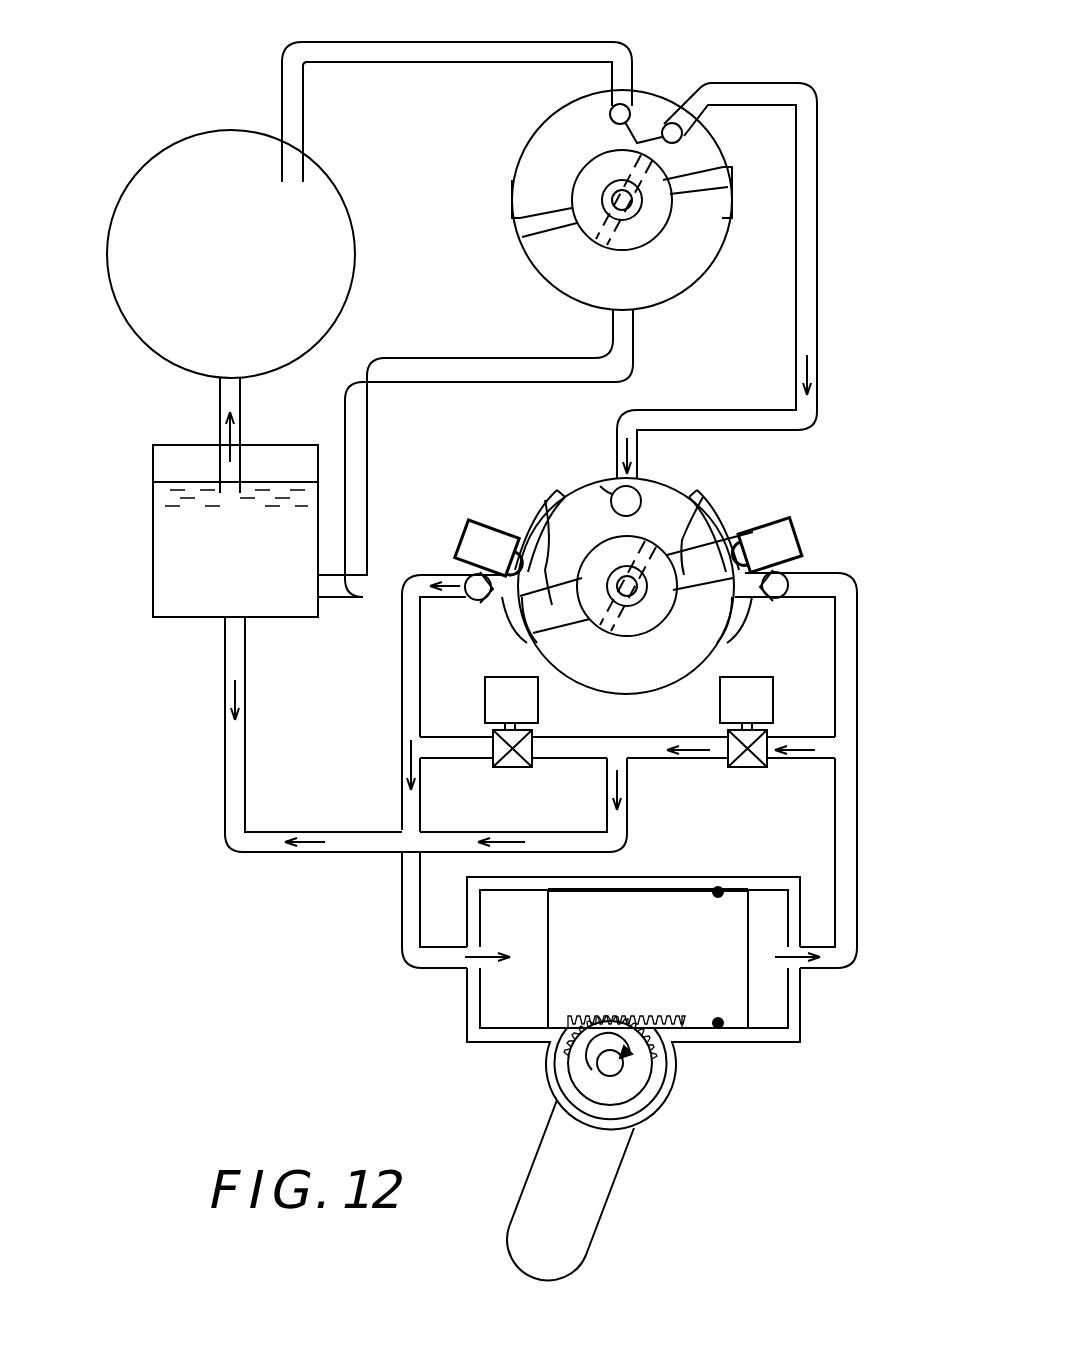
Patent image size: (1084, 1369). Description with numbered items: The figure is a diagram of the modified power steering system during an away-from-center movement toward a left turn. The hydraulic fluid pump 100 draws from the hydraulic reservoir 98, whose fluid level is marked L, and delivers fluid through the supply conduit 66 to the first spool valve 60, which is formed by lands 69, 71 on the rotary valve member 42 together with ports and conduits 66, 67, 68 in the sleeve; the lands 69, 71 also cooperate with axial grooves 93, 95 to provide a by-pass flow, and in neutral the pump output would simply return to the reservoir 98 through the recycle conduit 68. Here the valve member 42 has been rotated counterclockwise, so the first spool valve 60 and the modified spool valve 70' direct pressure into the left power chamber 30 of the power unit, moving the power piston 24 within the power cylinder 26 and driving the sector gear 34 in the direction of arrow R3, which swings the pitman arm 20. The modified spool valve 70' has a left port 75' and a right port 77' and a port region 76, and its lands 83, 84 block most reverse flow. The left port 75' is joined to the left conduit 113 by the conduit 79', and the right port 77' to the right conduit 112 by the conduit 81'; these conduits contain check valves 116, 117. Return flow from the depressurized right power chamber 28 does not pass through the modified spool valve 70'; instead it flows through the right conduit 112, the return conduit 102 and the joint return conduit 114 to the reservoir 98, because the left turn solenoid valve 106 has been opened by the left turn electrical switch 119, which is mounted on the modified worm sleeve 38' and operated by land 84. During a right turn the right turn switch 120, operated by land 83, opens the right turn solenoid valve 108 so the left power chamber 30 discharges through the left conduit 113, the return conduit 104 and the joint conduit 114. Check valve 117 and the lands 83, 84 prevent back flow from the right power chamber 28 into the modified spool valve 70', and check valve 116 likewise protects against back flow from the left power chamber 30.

The first spool valve 60 is at (668, 70).
The supply conduit 66 is at (392, 64).
The conduit 67 is at (832, 270).
The recycle conduit 68 is at (462, 385).
The land 69 is at (535, 237).
The land 71 is at (722, 232).
The axial groove 93 is at (510, 180).
The axial groove 95 is at (742, 185).
The rotary valve member 42 is at (593, 178).
The hydraulic fluid pump 100 is at (231, 311).
The hydraulic reservoir 98 is at (280, 620).
The liquid level L is at (190, 592).
The modified spool valve 70' is at (710, 582).
The modified worm sleeve 38' is at (673, 509).
The inlet port 76 is at (605, 495).
The land 83 is at (543, 508).
The land 84 is at (692, 486).
The left port 75' is at (482, 661).
The right port 77' is at (765, 633).
The conduit 79' is at (416, 703).
The conduit 81' is at (831, 770).
The check valve 116 is at (475, 600).
The check valve 117 is at (792, 600).
The left turn electrical switch 119 is at (806, 545).
The right turn switch 120 is at (458, 535).
The right turn solenoid valve 108 is at (532, 735).
The left turn solenoid valve 106 is at (728, 738).
The return conduit 104 is at (553, 762).
The return conduit 102 is at (800, 762).
The right conduit 112 is at (860, 888).
The left conduit 113 is at (400, 910).
The joint return conduit 114 is at (280, 858).
The power piston 24 is at (633, 1003).
The left power chamber 30 is at (480, 1000).
The right power chamber 28 is at (798, 1005).
The power cylinder 26 is at (800, 1042).
The sector gear 34 is at (595, 1078).
The arrow R3 is at (627, 1052).
The pitman arm 20 is at (580, 1207).